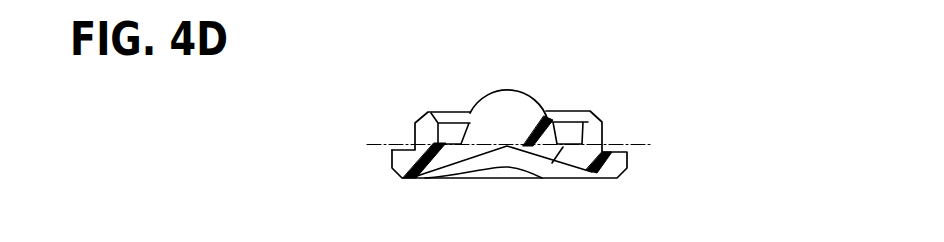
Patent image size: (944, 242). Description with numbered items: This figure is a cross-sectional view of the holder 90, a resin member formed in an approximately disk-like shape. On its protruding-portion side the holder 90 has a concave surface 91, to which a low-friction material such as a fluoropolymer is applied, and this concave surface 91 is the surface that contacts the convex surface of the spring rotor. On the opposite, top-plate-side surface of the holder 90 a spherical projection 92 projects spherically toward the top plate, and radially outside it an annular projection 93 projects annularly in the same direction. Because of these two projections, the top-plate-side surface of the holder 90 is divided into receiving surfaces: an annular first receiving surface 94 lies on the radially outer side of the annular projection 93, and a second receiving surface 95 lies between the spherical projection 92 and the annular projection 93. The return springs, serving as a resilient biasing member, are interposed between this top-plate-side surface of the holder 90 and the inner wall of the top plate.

The holder 90 is at (627, 157).
The concave surface 91 is at (506, 150).
The spherical projection 92 is at (480, 147).
The annular projection 93 is at (603, 132).
The first receiving surface 94 is at (402, 148).
The second receiving surface 95 is at (450, 141).